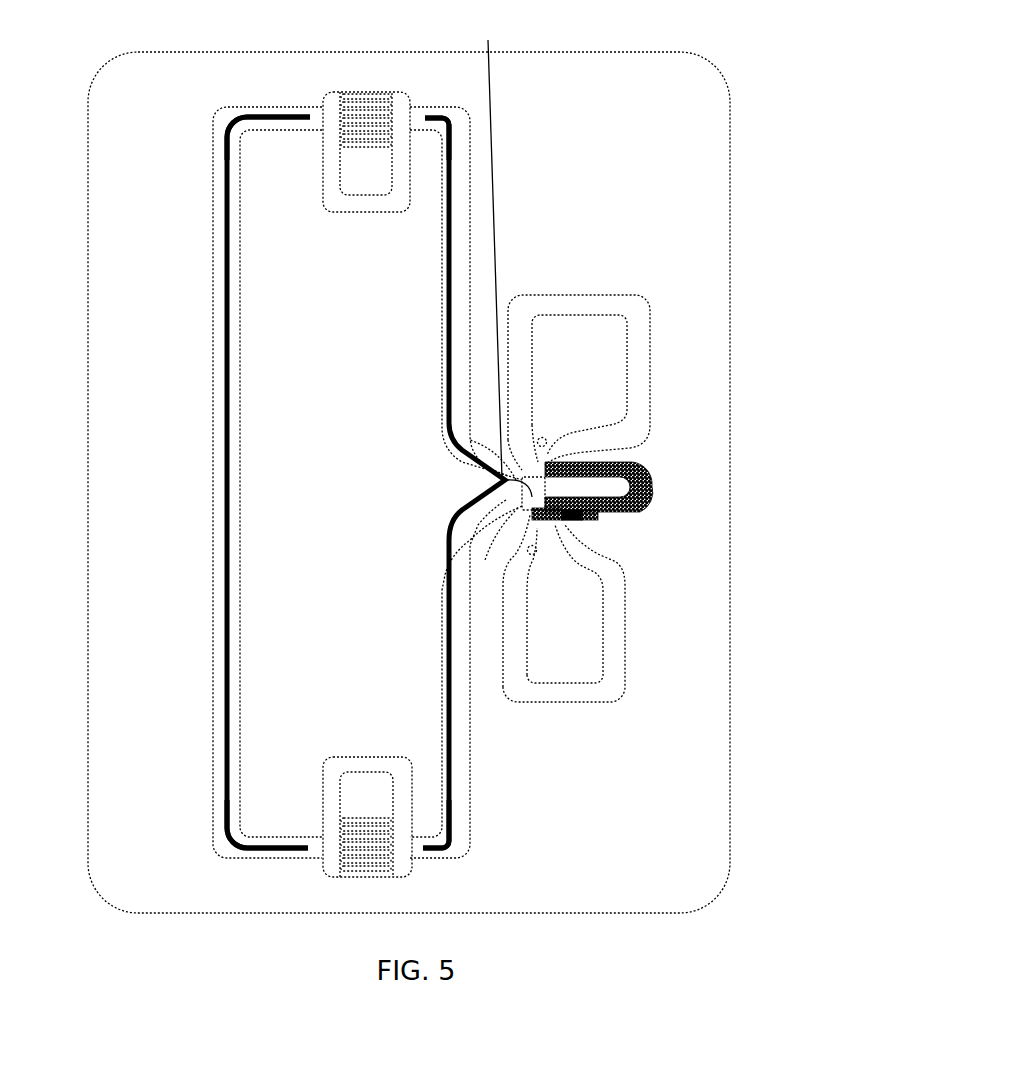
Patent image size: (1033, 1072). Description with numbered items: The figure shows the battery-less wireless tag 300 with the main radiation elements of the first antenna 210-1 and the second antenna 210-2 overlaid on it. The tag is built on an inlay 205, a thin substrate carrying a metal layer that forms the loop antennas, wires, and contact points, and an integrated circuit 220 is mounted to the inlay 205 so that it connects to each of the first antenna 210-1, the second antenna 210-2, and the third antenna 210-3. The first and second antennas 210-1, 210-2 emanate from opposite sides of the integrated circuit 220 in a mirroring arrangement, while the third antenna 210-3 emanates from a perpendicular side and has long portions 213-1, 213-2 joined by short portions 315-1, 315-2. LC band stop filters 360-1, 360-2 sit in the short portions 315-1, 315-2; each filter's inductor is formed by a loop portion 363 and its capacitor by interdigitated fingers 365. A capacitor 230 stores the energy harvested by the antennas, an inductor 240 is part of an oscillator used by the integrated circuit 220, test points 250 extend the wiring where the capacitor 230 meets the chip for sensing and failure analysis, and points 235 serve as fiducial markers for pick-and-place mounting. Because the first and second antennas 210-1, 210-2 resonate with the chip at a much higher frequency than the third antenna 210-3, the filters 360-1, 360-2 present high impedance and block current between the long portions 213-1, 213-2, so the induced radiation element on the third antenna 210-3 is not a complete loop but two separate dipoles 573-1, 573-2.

The wireless tag 300 is at (845, 106).
The inlay 205 is at (468, 482).
The first antenna 210-1 is at (640, 392).
The second antenna 210-2 is at (615, 680).
The third antenna 210-3 is at (436, 465).
The long portion 213-1 is at (217, 567).
The long portion 213-2 is at (443, 678).
The integrated circuit 220 is at (487, 241).
The capacitor 230 is at (577, 525).
The points 235 is at (536, 440).
The inductor 240 is at (655, 480).
The test points 250 is at (597, 515).
The short portion 315-1 is at (427, 108).
The short portion 315-2 is at (253, 839).
The LC band stop filter 360-1 is at (217, 475).
The LC band stop filter 360-2 is at (402, 856).
The loop portion 363 is at (330, 195).
The interdigitated fingers 365 is at (345, 142).
The dipole 573-1 is at (213, 252).
The dipole 573-2 is at (455, 275).